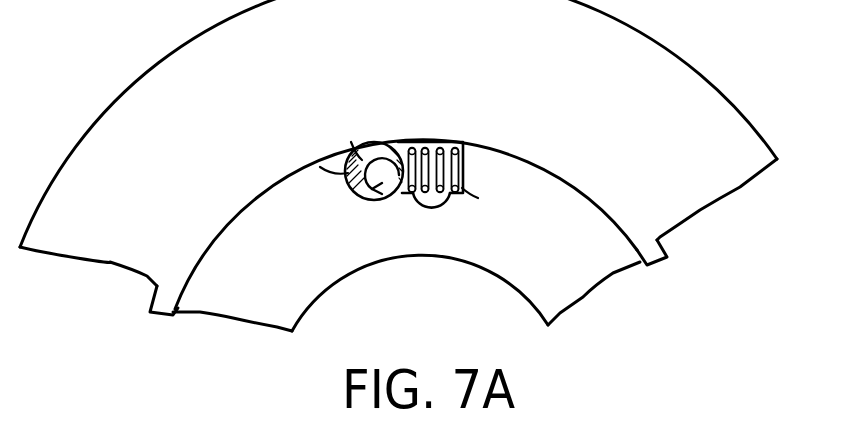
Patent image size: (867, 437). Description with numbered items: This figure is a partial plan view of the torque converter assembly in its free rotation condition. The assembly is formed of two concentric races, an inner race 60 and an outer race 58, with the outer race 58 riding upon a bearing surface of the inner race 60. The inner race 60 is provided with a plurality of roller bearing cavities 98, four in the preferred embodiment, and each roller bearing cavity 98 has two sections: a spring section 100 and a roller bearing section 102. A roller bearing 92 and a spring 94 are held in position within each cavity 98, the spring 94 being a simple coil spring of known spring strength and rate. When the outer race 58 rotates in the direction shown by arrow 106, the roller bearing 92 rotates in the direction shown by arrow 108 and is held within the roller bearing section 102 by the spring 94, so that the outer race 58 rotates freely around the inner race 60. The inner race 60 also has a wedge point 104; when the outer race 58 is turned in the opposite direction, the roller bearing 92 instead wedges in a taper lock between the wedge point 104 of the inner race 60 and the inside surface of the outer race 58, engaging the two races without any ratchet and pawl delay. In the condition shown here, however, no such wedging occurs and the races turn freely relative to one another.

The outer race 58 is at (693, 89).
The inner race 60 is at (473, 258).
The roller bearing 92 is at (381, 201).
The spring 94 is at (478, 198).
The roller bearing cavity 98 is at (410, 142).
The spring section 100 is at (435, 205).
The roller bearing section 102 is at (320, 167).
The wedge point 104 is at (351, 142).
The arrow 106 is at (322, 72).
The arrow 108 is at (347, 187).